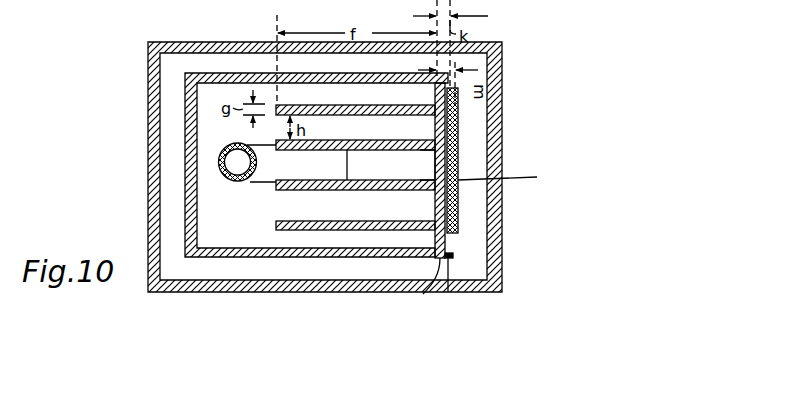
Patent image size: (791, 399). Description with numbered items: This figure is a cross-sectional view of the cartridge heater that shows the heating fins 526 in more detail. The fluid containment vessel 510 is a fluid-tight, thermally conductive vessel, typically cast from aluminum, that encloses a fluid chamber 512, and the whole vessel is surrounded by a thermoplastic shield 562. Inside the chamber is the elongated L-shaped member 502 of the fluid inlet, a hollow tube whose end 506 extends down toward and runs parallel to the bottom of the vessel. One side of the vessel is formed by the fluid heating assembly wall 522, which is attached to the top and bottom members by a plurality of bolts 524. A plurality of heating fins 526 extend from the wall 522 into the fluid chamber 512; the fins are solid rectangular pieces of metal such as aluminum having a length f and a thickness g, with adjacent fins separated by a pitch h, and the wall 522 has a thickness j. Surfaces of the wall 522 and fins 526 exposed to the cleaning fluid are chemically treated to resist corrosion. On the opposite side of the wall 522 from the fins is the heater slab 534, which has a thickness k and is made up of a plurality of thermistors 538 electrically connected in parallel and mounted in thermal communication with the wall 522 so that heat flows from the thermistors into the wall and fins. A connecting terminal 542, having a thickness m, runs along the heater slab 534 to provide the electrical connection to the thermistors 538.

The fluid containment vessel 510 is at (184, 117).
The thermoplastic shield 562 is at (148, 204).
The elongated L-shaped member 502 is at (225, 175).
The fluid chamber 512 is at (250, 235).
The heating fins 526 is at (415, 141).
The end 506 is at (345, 167).
The connecting terminal 542 is at (435, 166).
The thermistors 538 is at (462, 136).
The heater slab 534 is at (456, 241).
The fluid heating assembly wall 522 is at (424, 296).
The bolts 524 is at (448, 292).